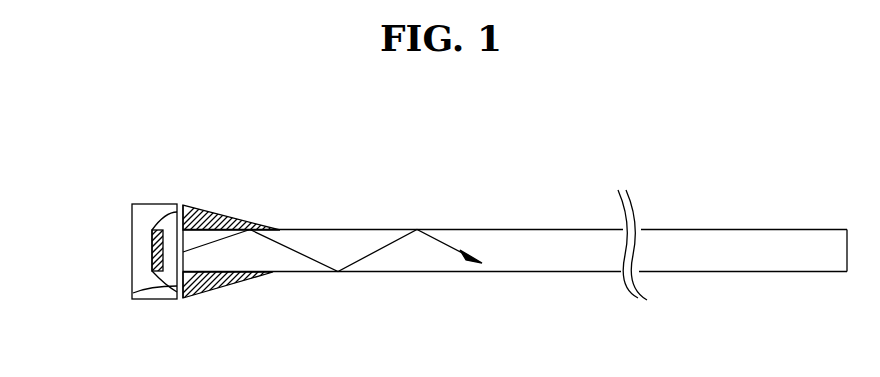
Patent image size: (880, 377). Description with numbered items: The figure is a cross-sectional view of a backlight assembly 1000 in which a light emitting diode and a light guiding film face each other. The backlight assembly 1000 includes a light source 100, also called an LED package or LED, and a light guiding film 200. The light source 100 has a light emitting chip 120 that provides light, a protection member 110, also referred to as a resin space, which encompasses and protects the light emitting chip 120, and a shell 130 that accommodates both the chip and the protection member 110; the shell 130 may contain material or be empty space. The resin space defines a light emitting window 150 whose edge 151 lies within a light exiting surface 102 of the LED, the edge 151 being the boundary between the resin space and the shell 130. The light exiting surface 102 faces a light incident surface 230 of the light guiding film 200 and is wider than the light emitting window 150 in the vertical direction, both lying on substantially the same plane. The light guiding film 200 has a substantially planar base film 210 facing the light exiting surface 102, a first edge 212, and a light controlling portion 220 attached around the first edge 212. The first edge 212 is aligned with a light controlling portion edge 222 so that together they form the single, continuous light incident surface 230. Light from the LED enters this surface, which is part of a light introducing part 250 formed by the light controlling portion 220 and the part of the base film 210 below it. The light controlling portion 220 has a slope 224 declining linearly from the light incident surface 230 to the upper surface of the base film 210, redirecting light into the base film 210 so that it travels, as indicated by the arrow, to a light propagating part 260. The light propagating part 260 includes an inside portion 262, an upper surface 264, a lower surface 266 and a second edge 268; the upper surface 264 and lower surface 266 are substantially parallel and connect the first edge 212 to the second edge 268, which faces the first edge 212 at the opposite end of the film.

The backlight assembly 1000 is at (452, 114).
The light source 100 is at (77, 232).
The light exiting surface 102 is at (132, 292).
The protection member 110 is at (152, 235).
The light emitting chip 120 is at (158, 247).
The shell 130 is at (153, 263).
The light emitting window 150 is at (167, 220).
The edge 151 is at (148, 210).
The light guiding film 200 is at (312, 329).
The base film 210 is at (307, 262).
The first edge 212 is at (205, 291).
The light controlling portion 220 is at (246, 275).
The light controlling portion edge 222 is at (188, 296).
The slope 224 is at (252, 227).
The light incident surface 230 is at (223, 329).
The light introducing part 250 is at (277, 261).
The light propagating part 260 is at (565, 154).
The inside portion 262 is at (558, 240).
The upper surface 264 is at (600, 228).
The lower surface 266 is at (653, 271).
The second edge 268 is at (847, 243).